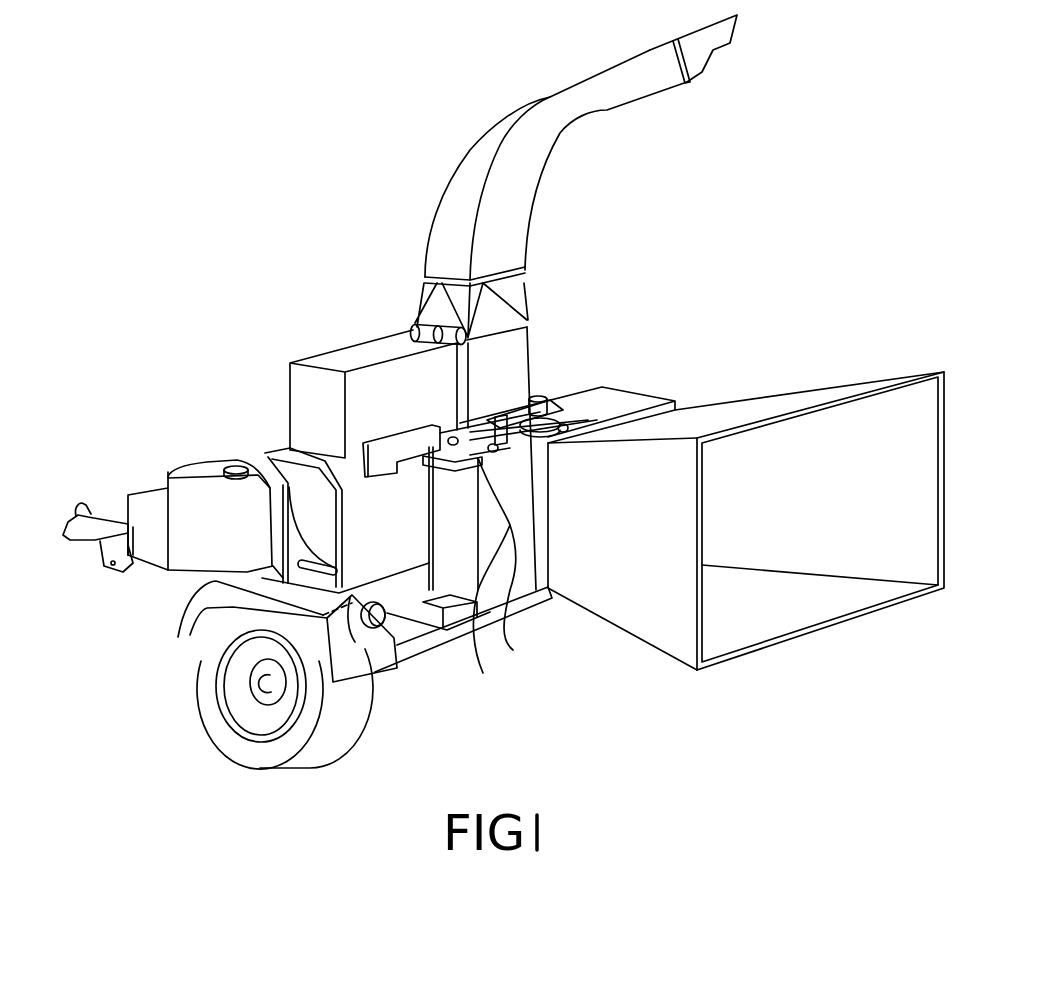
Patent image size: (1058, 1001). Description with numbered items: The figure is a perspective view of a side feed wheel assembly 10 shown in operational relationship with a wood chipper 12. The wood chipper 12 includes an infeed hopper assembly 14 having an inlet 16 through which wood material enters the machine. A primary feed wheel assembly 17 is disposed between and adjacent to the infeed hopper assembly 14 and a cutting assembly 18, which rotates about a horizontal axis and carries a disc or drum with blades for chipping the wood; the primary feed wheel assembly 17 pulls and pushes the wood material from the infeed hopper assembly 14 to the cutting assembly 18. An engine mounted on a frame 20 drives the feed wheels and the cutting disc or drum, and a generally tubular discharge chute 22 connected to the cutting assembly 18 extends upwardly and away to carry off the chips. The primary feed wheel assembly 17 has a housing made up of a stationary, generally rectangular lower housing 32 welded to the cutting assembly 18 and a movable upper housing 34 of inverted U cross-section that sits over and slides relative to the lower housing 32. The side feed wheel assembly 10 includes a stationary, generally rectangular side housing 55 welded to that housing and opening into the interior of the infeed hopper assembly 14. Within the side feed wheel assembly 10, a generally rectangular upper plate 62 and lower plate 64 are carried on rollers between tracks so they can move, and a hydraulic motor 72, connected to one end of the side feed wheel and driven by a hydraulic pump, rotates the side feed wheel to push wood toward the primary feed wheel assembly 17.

The side feed wheel assembly 10 is at (702, 341).
The wood chipper 12 is at (262, 413).
The infeed hopper assembly 14 is at (853, 386).
The inlet 16 is at (917, 547).
The primary feed wheel assembly 17 is at (583, 390).
The cutting assembly 18 is at (355, 350).
The frame 20 is at (413, 655).
The discharge chute 22 is at (457, 180).
The lower housing 32 is at (543, 563).
The upper housing 34 is at (643, 400).
The side housing 55 is at (432, 535).
The upper plate 62 is at (513, 650).
The lower plate 64 is at (483, 673).
The hydraulic motor 72 is at (537, 396).